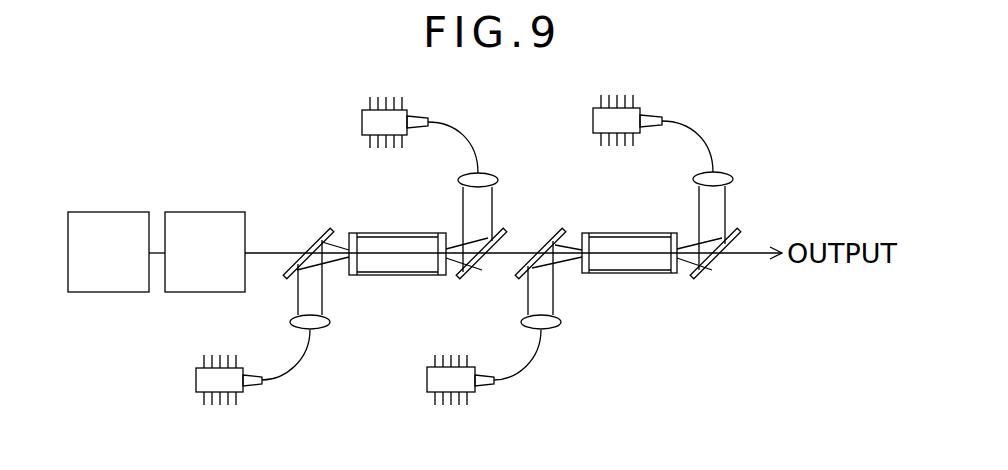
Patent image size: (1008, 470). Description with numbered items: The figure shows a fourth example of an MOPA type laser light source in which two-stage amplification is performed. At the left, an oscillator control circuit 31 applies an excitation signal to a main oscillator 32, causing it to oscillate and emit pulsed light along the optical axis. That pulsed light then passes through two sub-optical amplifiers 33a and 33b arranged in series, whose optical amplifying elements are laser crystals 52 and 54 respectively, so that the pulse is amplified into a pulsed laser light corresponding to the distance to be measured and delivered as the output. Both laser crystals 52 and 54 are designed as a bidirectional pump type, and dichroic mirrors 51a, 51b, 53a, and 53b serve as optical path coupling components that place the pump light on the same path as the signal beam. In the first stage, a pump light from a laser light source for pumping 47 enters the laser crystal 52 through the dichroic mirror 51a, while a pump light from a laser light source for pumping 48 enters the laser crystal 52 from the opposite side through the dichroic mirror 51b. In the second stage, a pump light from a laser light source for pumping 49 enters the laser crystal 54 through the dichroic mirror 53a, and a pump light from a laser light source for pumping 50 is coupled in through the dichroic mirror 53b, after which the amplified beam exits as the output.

The oscillator control circuit 31 is at (108, 212).
The main oscillator 32 is at (196, 212).
The sub-optical amplifier 33a is at (360, 202).
The sub-optical amplifier 33b is at (645, 213).
The laser light source for pumping 47 is at (196, 380).
The laser light source for pumping 48 is at (362, 122).
The laser light source for pumping 49 is at (427, 380).
The laser light source for pumping 50 is at (593, 122).
The dichroic mirror 51a is at (322, 233).
The dichroic mirror 51b is at (472, 277).
The laser crystal 52 is at (410, 233).
The dichroic mirror 53a is at (555, 231).
The dichroic mirror 53b is at (705, 280).
The laser crystal 54 is at (607, 232).